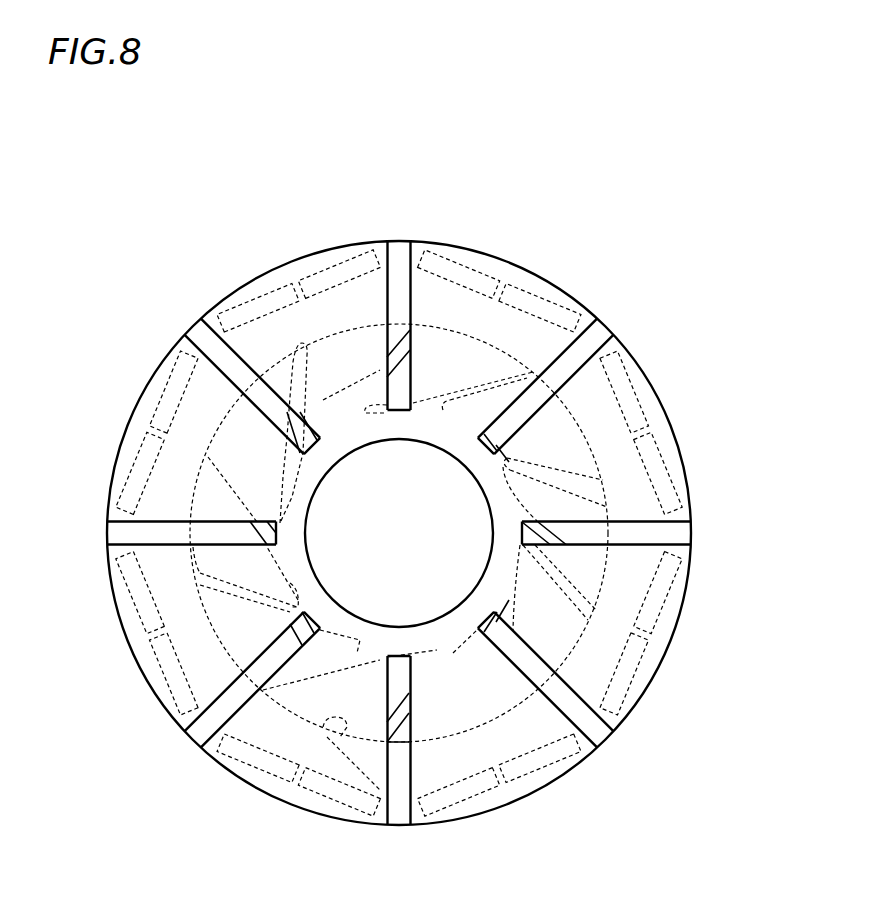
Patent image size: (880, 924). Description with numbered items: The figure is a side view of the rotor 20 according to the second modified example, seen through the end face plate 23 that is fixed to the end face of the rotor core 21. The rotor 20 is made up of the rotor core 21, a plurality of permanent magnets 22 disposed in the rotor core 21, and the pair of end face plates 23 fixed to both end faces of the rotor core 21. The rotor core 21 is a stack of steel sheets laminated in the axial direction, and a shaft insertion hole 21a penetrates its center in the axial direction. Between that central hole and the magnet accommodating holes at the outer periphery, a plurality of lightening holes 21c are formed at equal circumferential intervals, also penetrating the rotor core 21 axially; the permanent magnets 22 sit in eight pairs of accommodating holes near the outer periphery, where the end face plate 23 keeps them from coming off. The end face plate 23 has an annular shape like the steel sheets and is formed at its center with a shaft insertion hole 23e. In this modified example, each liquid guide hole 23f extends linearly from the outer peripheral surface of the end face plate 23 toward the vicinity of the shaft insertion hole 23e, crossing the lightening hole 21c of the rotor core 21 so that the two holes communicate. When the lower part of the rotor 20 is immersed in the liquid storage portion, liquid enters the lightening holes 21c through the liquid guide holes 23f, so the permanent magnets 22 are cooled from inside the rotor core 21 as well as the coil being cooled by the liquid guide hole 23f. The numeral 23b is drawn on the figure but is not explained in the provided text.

The rotor 20 is at (500, 153).
The rotor core 21 is at (220, 770).
The shaft insertion hole 21a is at (402, 447).
The lightening hole 21c is at (350, 808).
The permanent magnet 22 is at (157, 692).
The end face plate 23 is at (588, 305).
The barrier extension portion 23b is at (603, 407).
The shaft insertion hole 23e is at (313, 508).
The liquid guide hole 23f is at (400, 290).